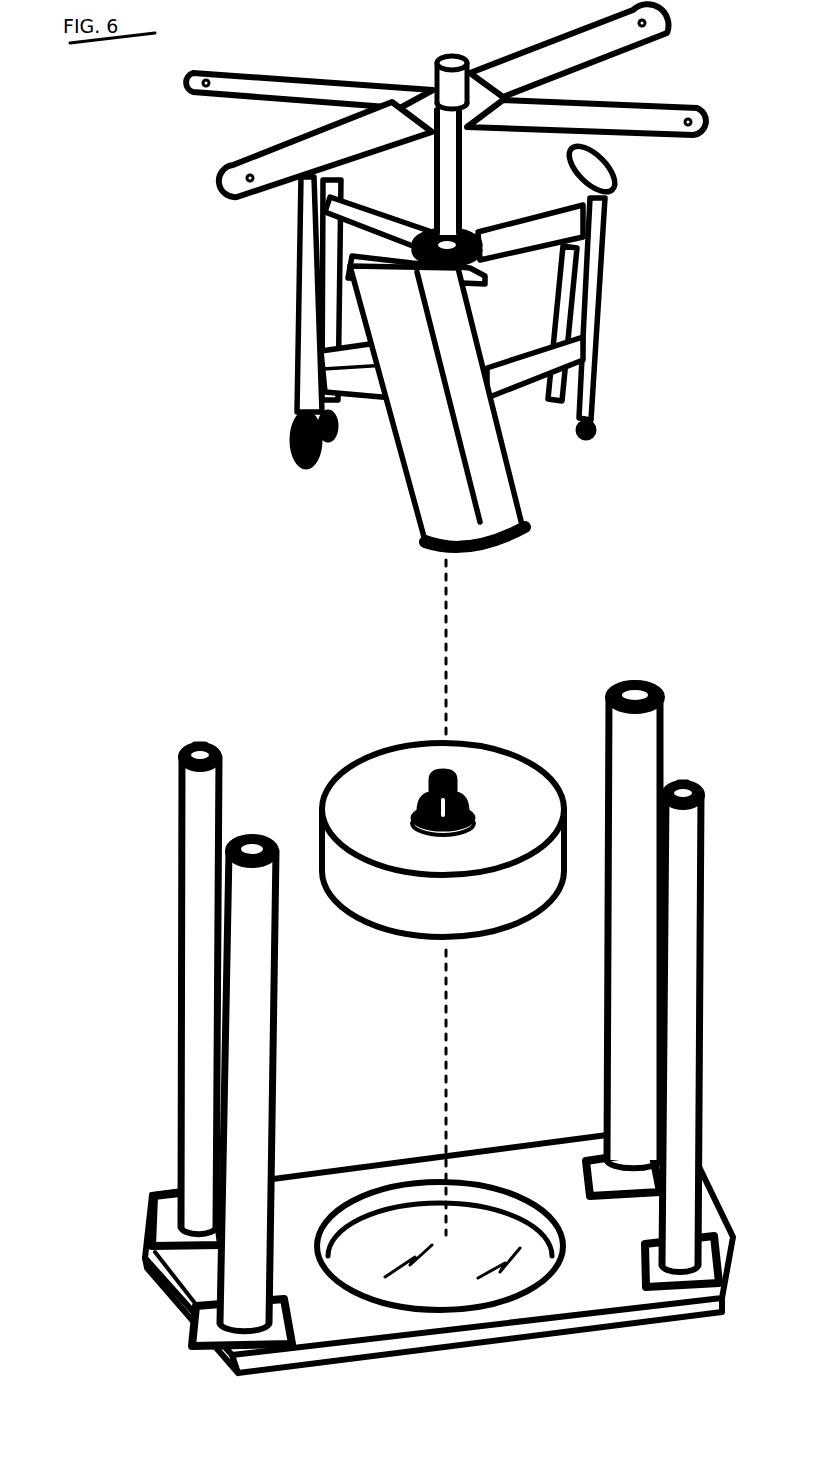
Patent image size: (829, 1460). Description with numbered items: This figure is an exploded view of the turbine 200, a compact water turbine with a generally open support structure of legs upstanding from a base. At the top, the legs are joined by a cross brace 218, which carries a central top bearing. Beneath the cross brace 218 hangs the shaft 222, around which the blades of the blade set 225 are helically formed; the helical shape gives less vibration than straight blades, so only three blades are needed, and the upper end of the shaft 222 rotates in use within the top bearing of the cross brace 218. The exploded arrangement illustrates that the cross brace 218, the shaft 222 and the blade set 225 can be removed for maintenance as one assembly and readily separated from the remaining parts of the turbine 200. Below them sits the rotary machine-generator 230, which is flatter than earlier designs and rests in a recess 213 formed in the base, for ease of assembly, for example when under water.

The turbine 200 is at (207, 538).
The recess 213 is at (397, 1203).
The cross brace 218 is at (612, 45).
The shaft 222 is at (452, 193).
The blade set 225 is at (604, 345).
The rotary machine-generator 230 is at (473, 767).